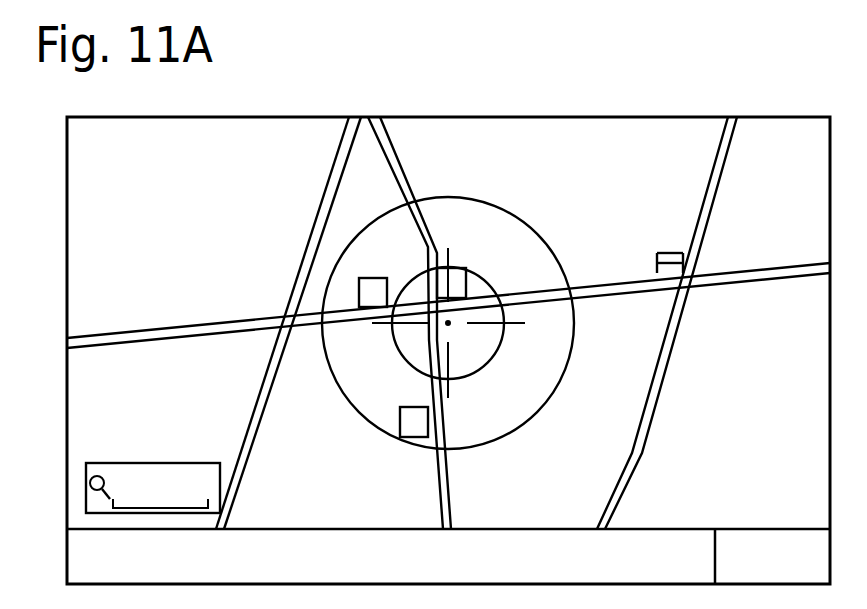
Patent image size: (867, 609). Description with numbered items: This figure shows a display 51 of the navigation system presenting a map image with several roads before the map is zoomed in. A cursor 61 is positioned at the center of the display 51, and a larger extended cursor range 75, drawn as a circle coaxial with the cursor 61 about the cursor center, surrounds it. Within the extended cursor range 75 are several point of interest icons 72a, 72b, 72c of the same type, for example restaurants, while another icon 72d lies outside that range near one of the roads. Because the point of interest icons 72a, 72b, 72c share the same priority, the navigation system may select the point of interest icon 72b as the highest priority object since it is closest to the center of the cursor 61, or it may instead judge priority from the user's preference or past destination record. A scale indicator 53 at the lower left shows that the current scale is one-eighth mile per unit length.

The display 51 is at (603, 117).
The extended cursor range 75 is at (481, 200).
The cursor 61 is at (480, 372).
The point of interest icon 72a is at (356, 256).
The point of interest icon 72b is at (452, 268).
The point of interest icon 72c is at (400, 425).
The facility icon 72d is at (660, 252).
The scale indicator 53 is at (86, 490).